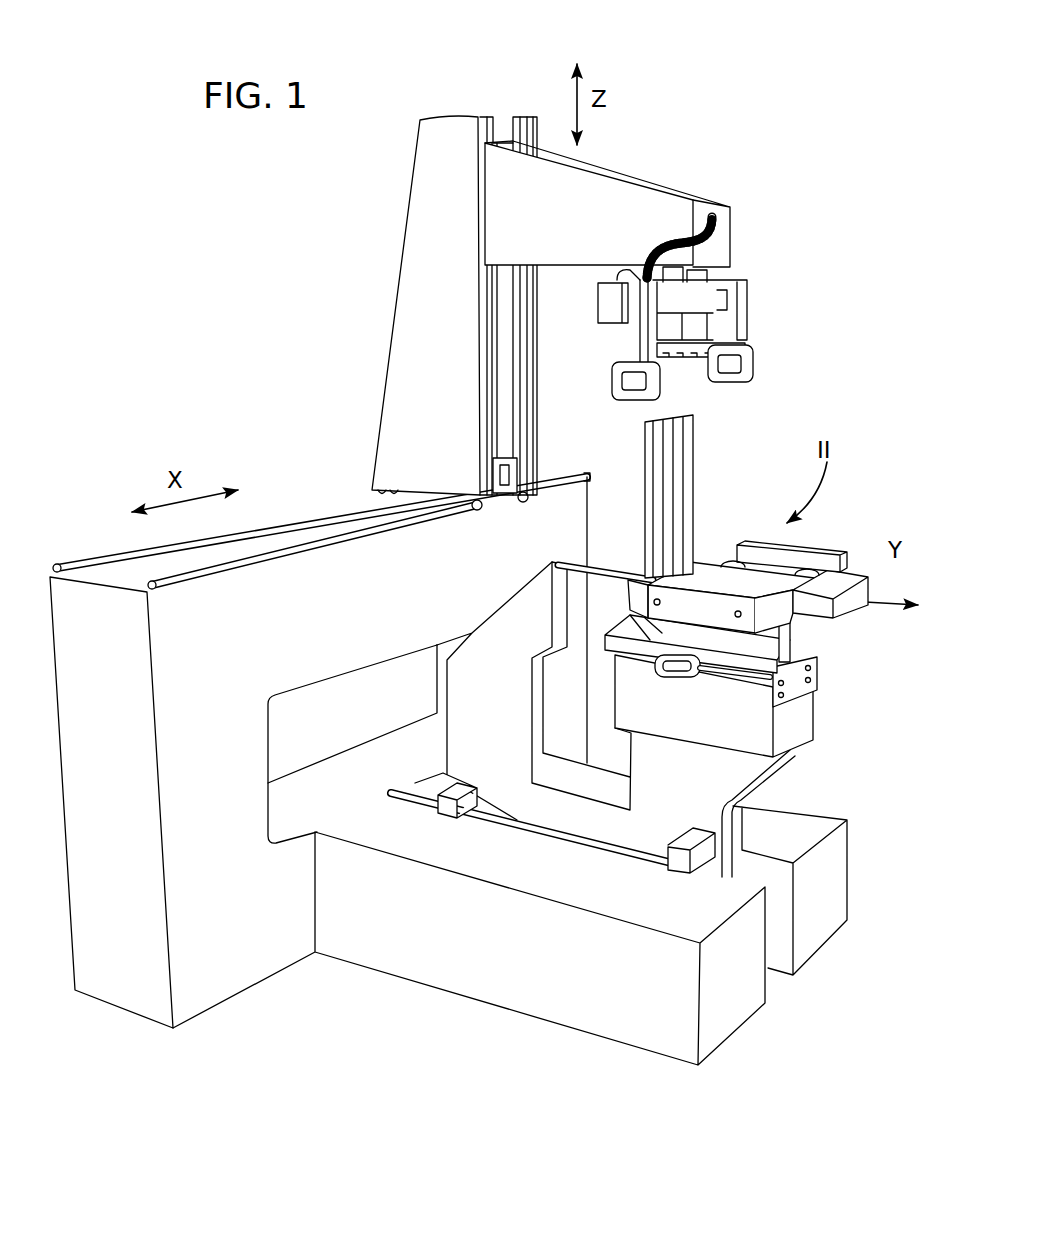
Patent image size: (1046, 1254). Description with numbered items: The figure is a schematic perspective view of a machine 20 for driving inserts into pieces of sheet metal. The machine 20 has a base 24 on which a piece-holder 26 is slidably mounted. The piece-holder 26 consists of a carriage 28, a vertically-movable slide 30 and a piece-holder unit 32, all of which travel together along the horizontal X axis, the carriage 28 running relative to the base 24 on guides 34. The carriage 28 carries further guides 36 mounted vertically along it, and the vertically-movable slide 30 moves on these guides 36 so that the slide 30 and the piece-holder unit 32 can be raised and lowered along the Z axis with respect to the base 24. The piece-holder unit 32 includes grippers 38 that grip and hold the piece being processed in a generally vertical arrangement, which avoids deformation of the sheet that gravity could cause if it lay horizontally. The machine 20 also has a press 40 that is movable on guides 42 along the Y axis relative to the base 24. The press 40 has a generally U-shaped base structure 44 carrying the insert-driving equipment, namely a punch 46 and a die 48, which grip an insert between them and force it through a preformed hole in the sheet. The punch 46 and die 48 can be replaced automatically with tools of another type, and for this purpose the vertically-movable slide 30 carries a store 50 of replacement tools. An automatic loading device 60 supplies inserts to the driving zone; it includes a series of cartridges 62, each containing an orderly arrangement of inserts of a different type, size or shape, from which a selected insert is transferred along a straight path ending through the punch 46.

The machine 20 is at (757, 214).
The base 24 is at (375, 915).
The piece-holder 26 is at (662, 174).
The carriage 28 is at (413, 327).
The vertically-movable slide 30 is at (587, 193).
The piece-holder unit 32 is at (752, 299).
The guides 34 is at (325, 540).
The guides 36 is at (487, 397).
The grippers 38 is at (673, 393).
The press 40 is at (827, 699).
The guides 42 is at (571, 836).
The base structure 44 is at (715, 774).
The punch 46 is at (601, 572).
The die 48 is at (588, 533).
The store of replacement tools 50 is at (714, 346).
The automatic loading device 60 is at (824, 543).
The cartridges 62 is at (658, 527).